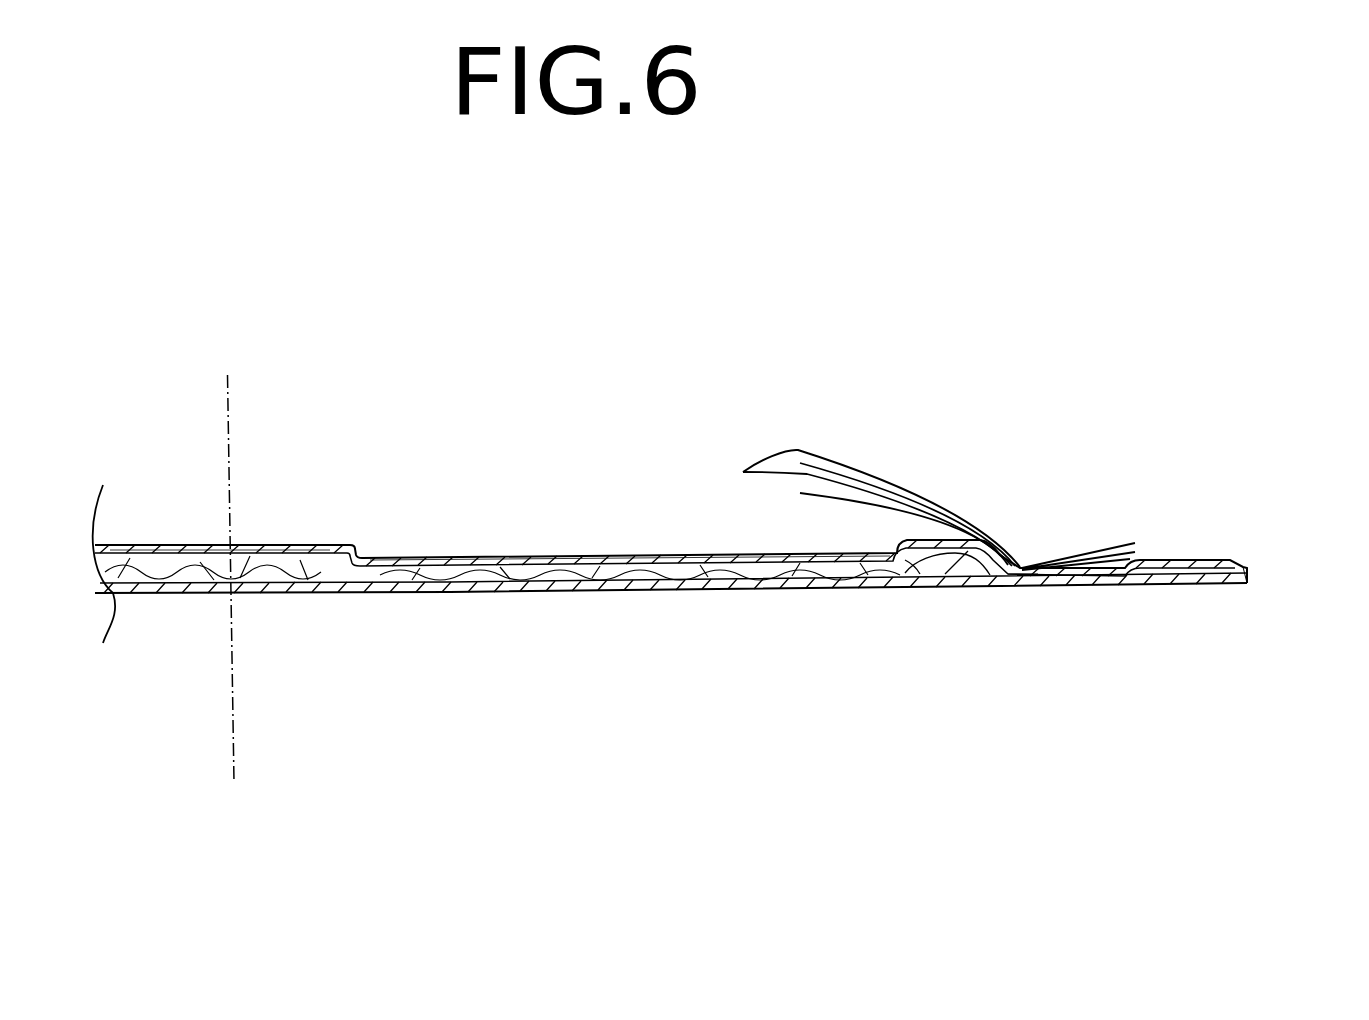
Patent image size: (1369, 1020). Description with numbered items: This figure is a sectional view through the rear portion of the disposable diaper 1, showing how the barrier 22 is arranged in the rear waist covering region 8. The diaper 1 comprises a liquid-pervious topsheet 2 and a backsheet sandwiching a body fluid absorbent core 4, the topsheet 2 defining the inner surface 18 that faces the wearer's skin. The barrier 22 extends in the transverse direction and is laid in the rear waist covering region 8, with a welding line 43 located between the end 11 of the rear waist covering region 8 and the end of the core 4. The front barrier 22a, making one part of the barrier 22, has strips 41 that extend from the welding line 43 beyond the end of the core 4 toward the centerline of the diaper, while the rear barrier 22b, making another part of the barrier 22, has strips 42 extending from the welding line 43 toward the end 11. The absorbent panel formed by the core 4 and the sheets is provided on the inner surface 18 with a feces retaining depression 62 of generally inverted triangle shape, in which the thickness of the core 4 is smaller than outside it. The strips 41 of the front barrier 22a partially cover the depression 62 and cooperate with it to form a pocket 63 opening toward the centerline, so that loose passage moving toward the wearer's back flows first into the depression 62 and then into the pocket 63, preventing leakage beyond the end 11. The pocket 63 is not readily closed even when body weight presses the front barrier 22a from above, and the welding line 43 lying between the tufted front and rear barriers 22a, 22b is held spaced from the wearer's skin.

The disposable diaper 1 is at (1086, 292).
The topsheet 2 is at (311, 547).
The body fluid absorbent core 4 is at (303, 570).
The rear waist covering region 8 is at (742, 588).
The end 11 is at (1250, 576).
The inner surface 18 is at (170, 547).
The barrier 22 is at (912, 405).
The front barrier 22a is at (833, 452).
The rear barrier 22b is at (1103, 541).
The strips 41 is at (745, 472).
The strips 42 is at (1073, 548).
The welding line 43 is at (1023, 570).
The feces retaining depression 62 is at (521, 555).
The pocket 63 is at (840, 527).